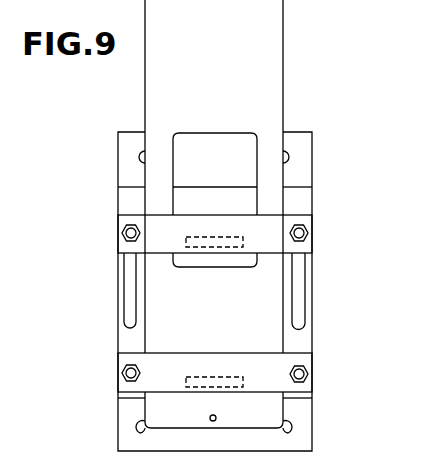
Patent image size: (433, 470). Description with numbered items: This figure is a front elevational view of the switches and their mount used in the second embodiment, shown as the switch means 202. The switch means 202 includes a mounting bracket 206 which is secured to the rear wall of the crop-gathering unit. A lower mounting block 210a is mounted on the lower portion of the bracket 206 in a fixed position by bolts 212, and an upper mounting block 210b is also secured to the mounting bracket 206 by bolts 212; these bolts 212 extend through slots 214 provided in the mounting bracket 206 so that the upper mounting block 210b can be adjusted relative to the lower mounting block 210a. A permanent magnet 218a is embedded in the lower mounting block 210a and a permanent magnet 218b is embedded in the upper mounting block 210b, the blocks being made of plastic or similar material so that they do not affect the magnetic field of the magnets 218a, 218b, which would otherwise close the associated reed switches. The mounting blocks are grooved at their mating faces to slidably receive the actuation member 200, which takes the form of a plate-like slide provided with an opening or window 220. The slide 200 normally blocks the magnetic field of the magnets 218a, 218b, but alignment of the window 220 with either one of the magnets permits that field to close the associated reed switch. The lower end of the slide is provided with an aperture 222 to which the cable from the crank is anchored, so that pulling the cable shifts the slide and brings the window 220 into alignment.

The actuation member 200 is at (283, 45).
The switch means 202 is at (320, 126).
The mounting bracket 206 is at (308, 173).
The lower mounting block 210a is at (257, 359).
The upper mounting block 210b is at (308, 219).
The bolts 212 is at (121, 233).
The slots 214 is at (128, 289).
The permanent magnet 218a is at (220, 377).
The permanent magnet 218b is at (219, 237).
The window 220 is at (215, 133).
The aperture 222 is at (216, 418).